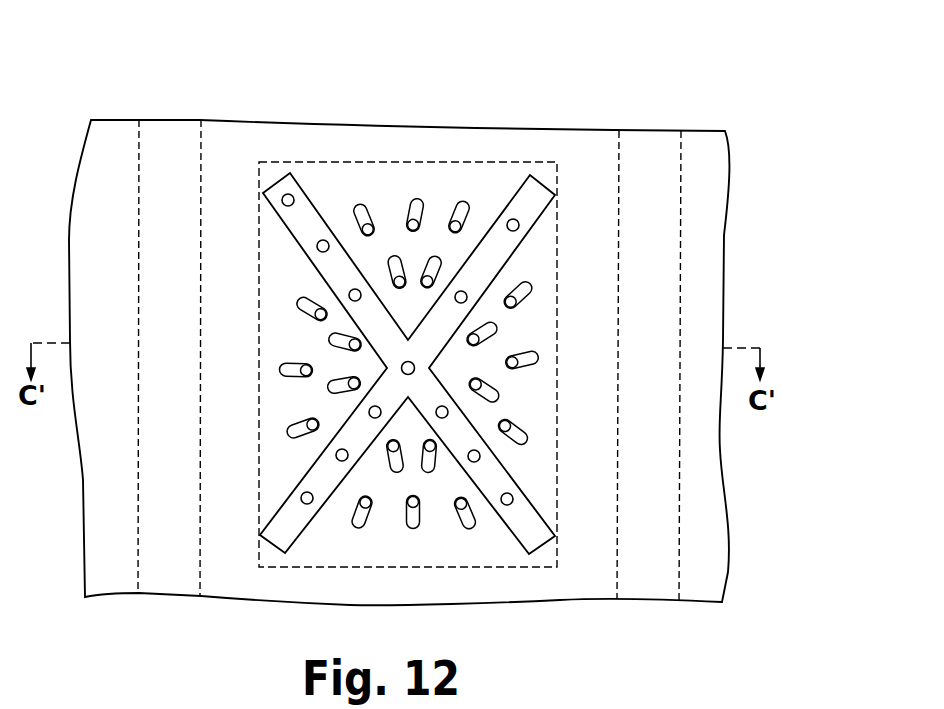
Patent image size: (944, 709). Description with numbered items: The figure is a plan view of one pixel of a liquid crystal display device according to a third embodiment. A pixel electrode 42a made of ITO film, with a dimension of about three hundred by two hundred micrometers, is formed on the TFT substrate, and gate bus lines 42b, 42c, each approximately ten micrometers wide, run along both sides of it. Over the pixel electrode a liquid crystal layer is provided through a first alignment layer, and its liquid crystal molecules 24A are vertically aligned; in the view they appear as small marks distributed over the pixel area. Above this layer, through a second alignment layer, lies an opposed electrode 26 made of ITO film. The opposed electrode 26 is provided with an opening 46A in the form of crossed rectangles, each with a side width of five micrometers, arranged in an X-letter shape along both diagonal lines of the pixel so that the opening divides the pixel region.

The opposed electrode 26 is at (723, 229).
The pixel electrode 42a is at (418, 161).
The gate bus line 42b is at (202, 156).
The gate bus line 42c is at (682, 160).
The opening 46A is at (289, 173).
The liquid crystal molecules 24A is at (468, 200).